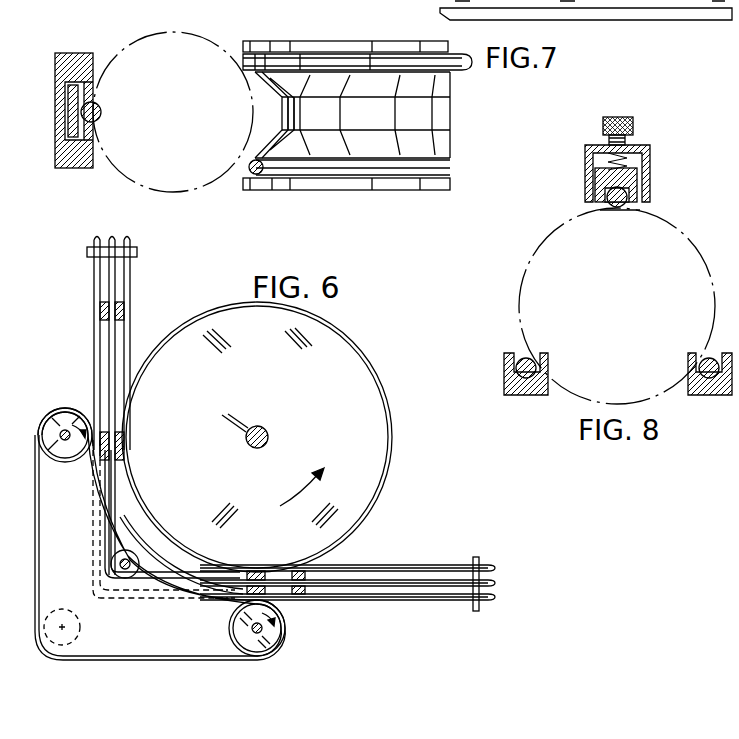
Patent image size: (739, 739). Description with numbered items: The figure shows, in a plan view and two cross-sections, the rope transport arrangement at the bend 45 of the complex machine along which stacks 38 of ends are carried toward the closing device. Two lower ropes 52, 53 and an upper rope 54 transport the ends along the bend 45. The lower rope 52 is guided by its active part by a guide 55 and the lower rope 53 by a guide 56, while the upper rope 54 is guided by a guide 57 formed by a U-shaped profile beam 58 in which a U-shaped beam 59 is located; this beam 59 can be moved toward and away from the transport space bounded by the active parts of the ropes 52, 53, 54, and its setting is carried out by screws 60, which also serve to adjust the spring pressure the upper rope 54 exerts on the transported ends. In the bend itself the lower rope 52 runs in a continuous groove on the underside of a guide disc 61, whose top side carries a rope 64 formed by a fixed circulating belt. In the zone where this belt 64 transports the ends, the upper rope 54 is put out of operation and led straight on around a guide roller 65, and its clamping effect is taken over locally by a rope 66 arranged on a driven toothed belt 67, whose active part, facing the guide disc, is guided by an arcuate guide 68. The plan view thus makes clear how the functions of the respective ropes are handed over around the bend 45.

In FIG. 7, the stack of ends 38 is at (218, 40).
In FIG. 8, the stack of ends 38 is at (697, 252).
In FIG. 6, the stack of ends 38 is at (124, 304).
In FIG. 6, the bend 45 is at (68, 378).
In FIG. 7, the lower rope 52 is at (250, 174).
In FIG. 8, the lower rope 52 is at (705, 360).
In FIG. 6, the lower rope 52 is at (426, 566).
In FIG. 8, the lower rope 53 is at (523, 358).
In FIG. 6, the lower rope 53 is at (424, 602).
In FIG. 8, the upper rope 54 is at (616, 209).
In FIG. 6, the upper rope 54 is at (374, 588).
In FIG. 8, the guide 55 is at (700, 396).
In FIG. 8, the guide 56 is at (530, 396).
In FIG. 8, the guide 57 is at (580, 153).
In FIG. 8, the U-shaped profile beam 58 is at (588, 175).
In FIG. 8, the U-shaped beam 59 is at (600, 208).
In FIG. 8, the screw 60 is at (634, 126).
In FIG. 7, the guide disc 61 is at (338, 48).
In FIG. 6, the guide disc 61 is at (385, 403).
In FIG. 7, the rope formed by a fixed circulating belt 64 is at (396, 55).
In FIG. 6, the rope formed by a fixed circulating belt 64 is at (392, 460).
In FIG. 6, the guide roller 65 is at (128, 580).
In FIG. 7, the rope 66 is at (100, 108).
In FIG. 7, the driven toothed belt 67 is at (64, 112).
In FIG. 7, the arcuate guide 68 is at (70, 58).